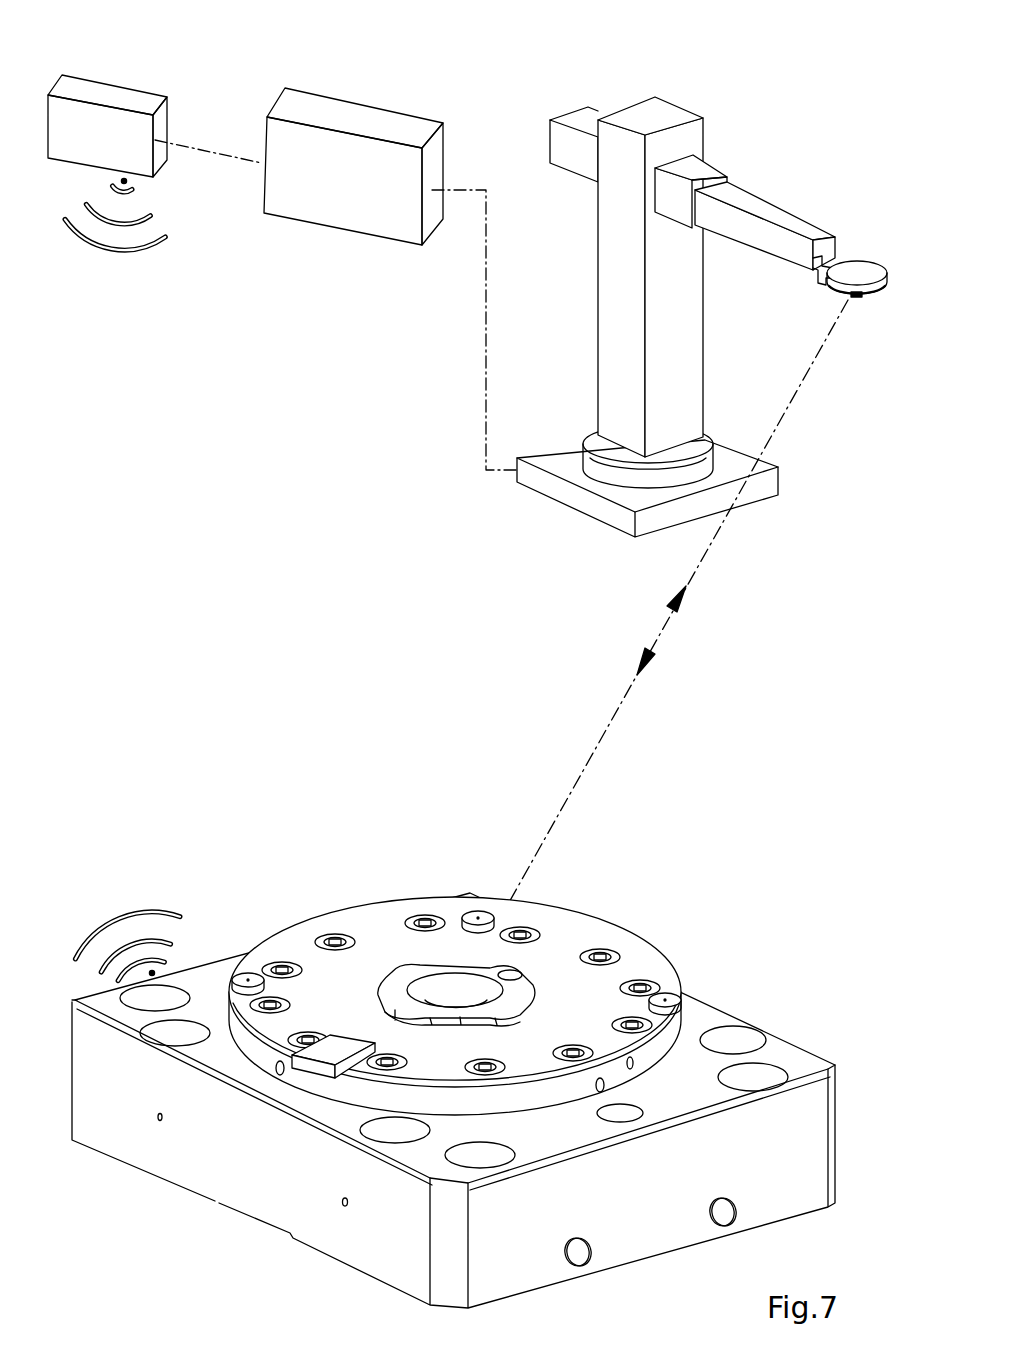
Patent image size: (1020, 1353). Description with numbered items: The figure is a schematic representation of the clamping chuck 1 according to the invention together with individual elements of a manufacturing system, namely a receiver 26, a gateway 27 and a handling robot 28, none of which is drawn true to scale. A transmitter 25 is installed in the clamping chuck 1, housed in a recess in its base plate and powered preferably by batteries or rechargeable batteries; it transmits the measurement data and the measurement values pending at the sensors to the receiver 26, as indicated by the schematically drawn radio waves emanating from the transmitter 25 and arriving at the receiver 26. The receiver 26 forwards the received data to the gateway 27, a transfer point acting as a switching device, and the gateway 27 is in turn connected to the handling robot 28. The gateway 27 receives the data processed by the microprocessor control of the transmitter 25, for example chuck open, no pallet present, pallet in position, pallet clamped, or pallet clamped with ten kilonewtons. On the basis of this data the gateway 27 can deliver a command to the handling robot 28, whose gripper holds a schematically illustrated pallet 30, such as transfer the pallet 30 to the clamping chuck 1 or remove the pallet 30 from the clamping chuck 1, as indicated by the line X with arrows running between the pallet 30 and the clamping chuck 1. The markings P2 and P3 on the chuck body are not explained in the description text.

The clamping chuck 1 is at (453, 1071).
The transmitter 25 is at (147, 883).
The receiver 26 is at (121, 56).
The gateway 27 is at (362, 72).
The handling robot 28 is at (572, 281).
The pallet 30 is at (862, 238).
The line with arrows X is at (663, 631).
The position P2 is at (737, 1211).
The position P3 is at (592, 1251).